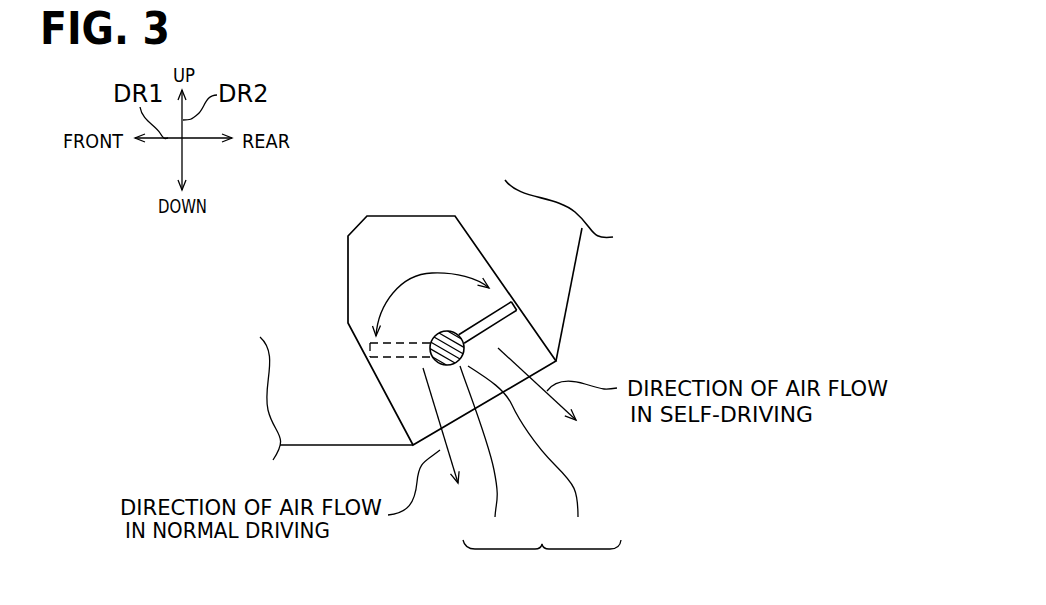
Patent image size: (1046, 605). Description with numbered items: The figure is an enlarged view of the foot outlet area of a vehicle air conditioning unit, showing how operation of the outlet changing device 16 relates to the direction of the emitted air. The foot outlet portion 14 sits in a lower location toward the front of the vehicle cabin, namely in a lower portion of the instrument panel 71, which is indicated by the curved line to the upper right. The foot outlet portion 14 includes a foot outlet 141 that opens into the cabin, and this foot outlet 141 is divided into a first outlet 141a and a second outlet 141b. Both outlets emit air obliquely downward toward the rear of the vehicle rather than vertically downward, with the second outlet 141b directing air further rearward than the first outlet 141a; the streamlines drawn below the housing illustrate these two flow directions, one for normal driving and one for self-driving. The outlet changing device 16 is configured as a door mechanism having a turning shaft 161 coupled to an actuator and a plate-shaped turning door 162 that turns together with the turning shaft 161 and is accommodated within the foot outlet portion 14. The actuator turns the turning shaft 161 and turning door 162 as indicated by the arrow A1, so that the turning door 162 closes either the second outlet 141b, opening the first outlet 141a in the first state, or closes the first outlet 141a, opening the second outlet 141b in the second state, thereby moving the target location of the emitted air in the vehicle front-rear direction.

The foot outlet portion 14 is at (437, 216).
The instrument panel 71 is at (575, 262).
The arrow indicating turning of turning shaft and turning door A1 is at (418, 277).
The outlet changing device 16 is at (503, 325).
The turning door 162 is at (509, 305).
The turning shaft 161 is at (464, 356).
The foot outlet 141 is at (542, 562).
The first outlet 141a is at (493, 456).
The second outlet 141b is at (541, 456).